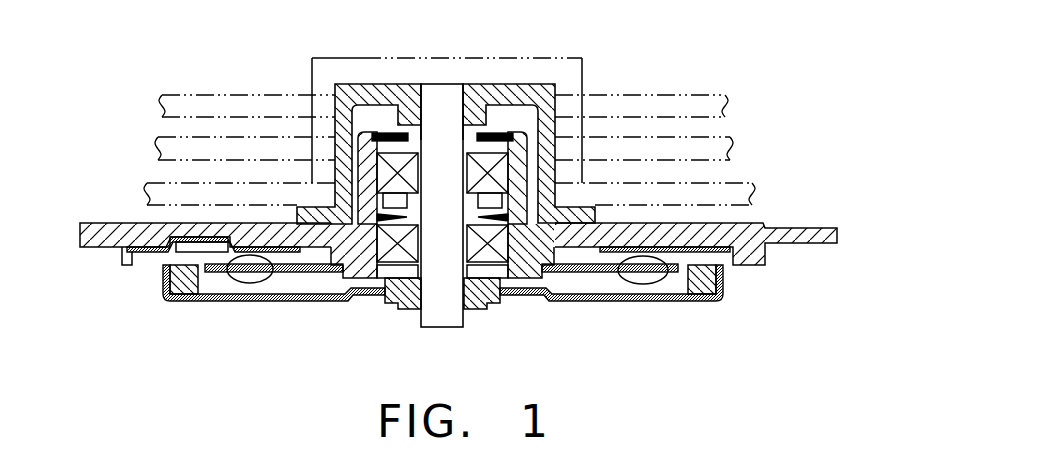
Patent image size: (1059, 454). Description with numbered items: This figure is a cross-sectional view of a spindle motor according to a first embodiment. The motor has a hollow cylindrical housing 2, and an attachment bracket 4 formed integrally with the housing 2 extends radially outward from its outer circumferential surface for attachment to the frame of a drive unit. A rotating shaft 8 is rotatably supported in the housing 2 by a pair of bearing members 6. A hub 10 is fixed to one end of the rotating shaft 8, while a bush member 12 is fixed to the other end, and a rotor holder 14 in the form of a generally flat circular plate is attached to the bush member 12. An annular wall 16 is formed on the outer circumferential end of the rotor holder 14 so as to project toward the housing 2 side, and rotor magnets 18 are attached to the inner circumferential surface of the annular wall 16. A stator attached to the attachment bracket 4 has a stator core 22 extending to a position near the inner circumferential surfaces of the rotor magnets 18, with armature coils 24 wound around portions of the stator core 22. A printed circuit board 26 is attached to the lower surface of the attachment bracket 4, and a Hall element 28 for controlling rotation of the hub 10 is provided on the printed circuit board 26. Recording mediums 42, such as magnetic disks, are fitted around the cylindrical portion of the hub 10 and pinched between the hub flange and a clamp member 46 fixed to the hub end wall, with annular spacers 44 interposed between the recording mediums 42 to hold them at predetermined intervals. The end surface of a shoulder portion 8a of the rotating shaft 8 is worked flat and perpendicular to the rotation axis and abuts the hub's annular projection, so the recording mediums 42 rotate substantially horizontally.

The hollow cylindrical housing 2 is at (527, 171).
The attachment bracket 4 is at (703, 226).
The bearing members 6 is at (361, 279).
The rotating shaft 8 is at (441, 316).
The shoulder portion 8a is at (415, 133).
The hub 10 is at (334, 150).
The bush member 12 is at (483, 309).
The rotor holder 14 is at (613, 302).
The annular wall 16 is at (164, 295).
The rotor magnets 18 is at (188, 298).
The stator core 22 is at (322, 258).
The armature coils 24 is at (249, 283).
The printed circuit board 26 is at (284, 272).
The Hall element 28 is at (177, 223).
The recording mediums 42 is at (731, 137).
The annular spacers 44 is at (583, 130).
The clamp member 46 is at (502, 57).